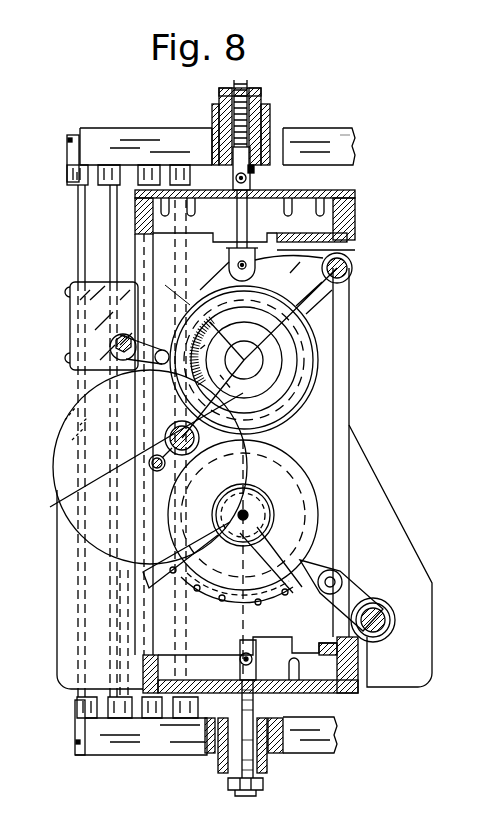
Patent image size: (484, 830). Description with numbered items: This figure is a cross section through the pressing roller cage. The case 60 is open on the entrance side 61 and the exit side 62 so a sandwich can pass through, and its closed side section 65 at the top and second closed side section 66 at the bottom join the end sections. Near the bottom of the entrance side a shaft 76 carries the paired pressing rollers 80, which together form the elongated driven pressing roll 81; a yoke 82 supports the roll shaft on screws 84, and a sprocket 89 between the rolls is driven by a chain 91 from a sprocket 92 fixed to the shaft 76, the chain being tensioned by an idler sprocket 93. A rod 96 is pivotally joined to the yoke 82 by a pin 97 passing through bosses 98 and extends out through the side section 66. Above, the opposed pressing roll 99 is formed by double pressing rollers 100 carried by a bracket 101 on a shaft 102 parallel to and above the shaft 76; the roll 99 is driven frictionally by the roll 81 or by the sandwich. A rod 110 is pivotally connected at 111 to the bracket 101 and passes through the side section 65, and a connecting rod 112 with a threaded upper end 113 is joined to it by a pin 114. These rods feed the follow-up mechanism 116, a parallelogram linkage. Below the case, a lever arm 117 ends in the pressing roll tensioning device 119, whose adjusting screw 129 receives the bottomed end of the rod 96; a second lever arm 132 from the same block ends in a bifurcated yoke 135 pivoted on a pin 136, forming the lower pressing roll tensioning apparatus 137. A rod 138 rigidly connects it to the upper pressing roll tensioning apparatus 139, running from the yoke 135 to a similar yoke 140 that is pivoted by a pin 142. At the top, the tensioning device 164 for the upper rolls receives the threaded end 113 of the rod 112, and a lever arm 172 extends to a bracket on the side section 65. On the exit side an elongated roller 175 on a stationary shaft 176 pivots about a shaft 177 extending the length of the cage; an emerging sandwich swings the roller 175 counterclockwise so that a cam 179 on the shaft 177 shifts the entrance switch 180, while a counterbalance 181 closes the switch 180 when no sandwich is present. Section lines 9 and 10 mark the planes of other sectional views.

The section line 9 is at (112, 614).
The section line 10 is at (165, 290).
The case 60 is at (364, 212).
The entrance side 61 is at (345, 401).
The exit side 62 is at (135, 258).
The closed side section 65 is at (332, 190).
The second closed side section 66 is at (333, 692).
The shaft 76 is at (387, 600).
The paired pressing rollers 80 is at (315, 478).
The driven pressing roll 81 is at (333, 490).
The yoke 82 is at (355, 590).
The screws 84 is at (250, 513).
The sprocket 89 is at (285, 460).
The chain 91 is at (320, 518).
The sprocket 92 is at (376, 637).
The idler sprocket 93 is at (345, 573).
The rod 96 is at (255, 702).
The pin 97 is at (253, 661).
The bosses 98 is at (240, 660).
The opposed pressing roll 99 is at (337, 374).
The double pressing rollers 100 is at (318, 350).
The bracket 101 is at (312, 310).
The shaft 102 is at (350, 278).
The rod 110 is at (238, 213).
The pivotal connection 111 is at (256, 268).
The connecting rod 112 is at (254, 168).
The threaded upper end 113 is at (250, 84).
The pin 114 is at (236, 178).
The follow-up mechanism 116 is at (300, 103).
The lever arm 117 is at (310, 745).
The pressing roll tensioning device 119 is at (282, 777).
The adjusting screw 129 is at (232, 796).
The second lever arm 132 is at (177, 736).
The bifurcated yoke 135 is at (77, 706).
The pin 136 is at (75, 743).
The lower pressing roll tensioning apparatus 137 is at (118, 758).
The rod 138 is at (110, 222).
The upper pressing roll tensioning apparatus 139 is at (333, 128).
The yoke 140 is at (67, 172).
The pin 142 is at (70, 141).
The tensioning device 164 is at (211, 102).
The lever arm 172 is at (348, 147).
The elongated roller 175 is at (238, 375).
The stationary shaft 176 is at (199, 450).
The shaft 177 is at (58, 503).
The cam 179 is at (97, 405).
The entrance switch 180 is at (97, 320).
The counterbalance 181 is at (145, 638).